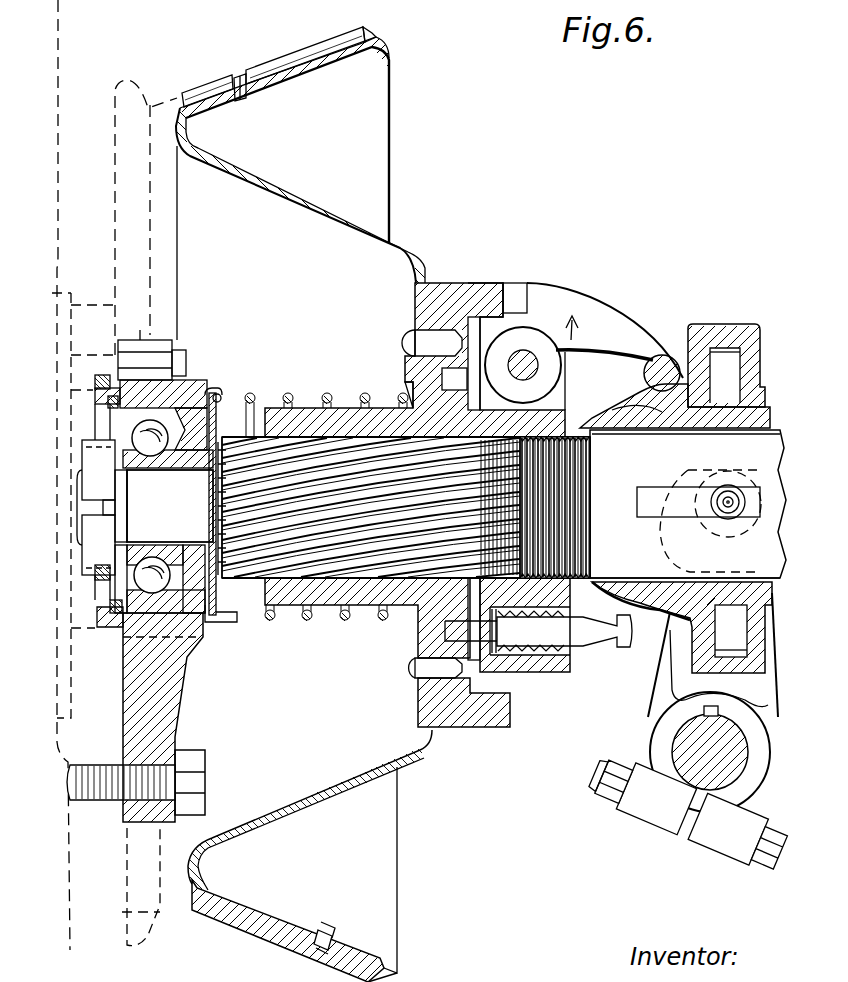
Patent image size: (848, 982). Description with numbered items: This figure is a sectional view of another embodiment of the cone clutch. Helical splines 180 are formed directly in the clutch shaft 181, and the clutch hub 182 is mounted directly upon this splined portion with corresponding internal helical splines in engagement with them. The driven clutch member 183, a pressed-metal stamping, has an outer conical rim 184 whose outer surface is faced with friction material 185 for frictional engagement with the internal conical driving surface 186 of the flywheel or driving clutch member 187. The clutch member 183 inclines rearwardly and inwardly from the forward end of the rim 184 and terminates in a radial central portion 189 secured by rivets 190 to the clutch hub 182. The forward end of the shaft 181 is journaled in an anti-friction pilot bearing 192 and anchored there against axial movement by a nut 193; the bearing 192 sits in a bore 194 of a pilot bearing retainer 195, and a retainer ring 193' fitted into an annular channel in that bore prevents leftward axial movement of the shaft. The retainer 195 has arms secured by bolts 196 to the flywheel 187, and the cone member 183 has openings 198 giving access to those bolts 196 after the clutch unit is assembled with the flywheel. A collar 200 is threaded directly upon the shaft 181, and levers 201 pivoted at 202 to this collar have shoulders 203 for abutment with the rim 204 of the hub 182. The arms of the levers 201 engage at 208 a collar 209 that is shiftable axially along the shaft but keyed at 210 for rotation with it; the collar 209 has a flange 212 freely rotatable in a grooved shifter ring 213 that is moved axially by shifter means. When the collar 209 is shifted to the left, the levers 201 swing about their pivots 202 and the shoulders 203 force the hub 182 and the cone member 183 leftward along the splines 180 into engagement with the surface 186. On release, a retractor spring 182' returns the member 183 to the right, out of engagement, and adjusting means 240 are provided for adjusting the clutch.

The helical splines 180 is at (266, 546).
The clutch shaft 181 is at (646, 472).
The clutch hub 182 is at (377, 539).
The retractor spring 182' is at (374, 383).
The driven clutch member 183 is at (293, 178).
The outer conical rim 184 is at (300, 82).
The friction material 185 is at (314, 56).
The internal conical driving surface 186 is at (260, 62).
The flywheel or driving clutch member 187 is at (78, 47).
The radial central portion 189 is at (418, 306).
The rivets 190 is at (415, 343).
The anti-friction bearing 192 is at (125, 415).
The nut 193 is at (65, 502).
The retainer ring 193' is at (55, 475).
The bore 194 is at (214, 392).
The pilot bearing retainer 195 is at (170, 678).
The bolts 196 is at (170, 362).
The openings 198 is at (323, 768).
The collar 200 is at (630, 446).
The levers 201 is at (572, 300).
The pivots 202 is at (540, 378).
The shoulders 203 is at (514, 300).
The rim 204 is at (478, 300).
The lever arm engagement 208 is at (664, 355).
The collar 209 is at (640, 402).
The key 210 is at (640, 503).
The flange 212 is at (726, 354).
The grooved shifter ring 213 is at (712, 330).
The adjusting means 240 is at (546, 636).